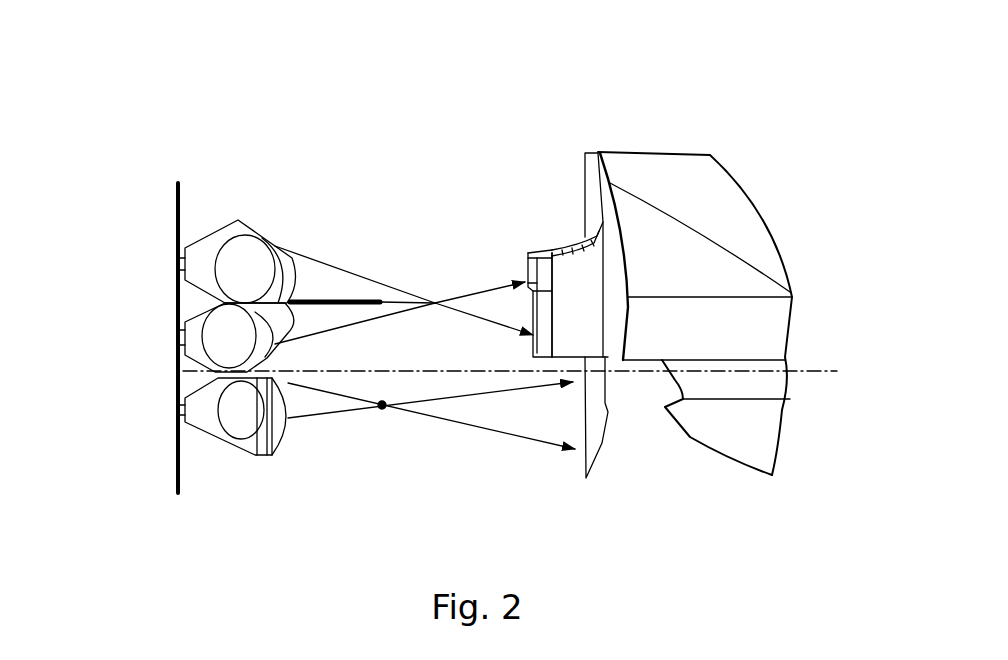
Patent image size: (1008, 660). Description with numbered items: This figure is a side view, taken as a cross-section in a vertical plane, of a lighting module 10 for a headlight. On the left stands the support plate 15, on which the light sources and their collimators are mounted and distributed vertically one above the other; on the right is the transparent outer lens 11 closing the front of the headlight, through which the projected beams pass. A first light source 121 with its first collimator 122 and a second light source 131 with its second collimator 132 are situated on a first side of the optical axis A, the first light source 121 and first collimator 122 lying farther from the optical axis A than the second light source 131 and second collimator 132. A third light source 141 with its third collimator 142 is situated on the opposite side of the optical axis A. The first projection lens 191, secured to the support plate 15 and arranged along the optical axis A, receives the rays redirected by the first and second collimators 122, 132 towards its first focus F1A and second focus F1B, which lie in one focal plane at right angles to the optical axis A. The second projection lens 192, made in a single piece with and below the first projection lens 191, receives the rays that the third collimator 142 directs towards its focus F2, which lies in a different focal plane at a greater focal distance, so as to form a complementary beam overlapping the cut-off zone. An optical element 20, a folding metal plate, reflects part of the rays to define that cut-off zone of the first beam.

The lighting module 10 is at (350, 91).
The transparent outer lens 11 is at (700, 183).
The support plate 15 is at (176, 205).
The optical element 20 is at (336, 299).
The first light source 121 is at (177, 265).
The first collimator 122 is at (239, 258).
The second light source 131 is at (177, 340).
The second collimator 132 is at (221, 330).
The third light source 141 is at (177, 415).
The third collimator 142 is at (241, 412).
The first projection lens 191 is at (592, 195).
The second projection lens 192 is at (595, 417).
The optical axis A is at (794, 370).
The first focus F1A is at (404, 238).
The second focus F1B is at (437, 300).
The focus F2 is at (381, 410).